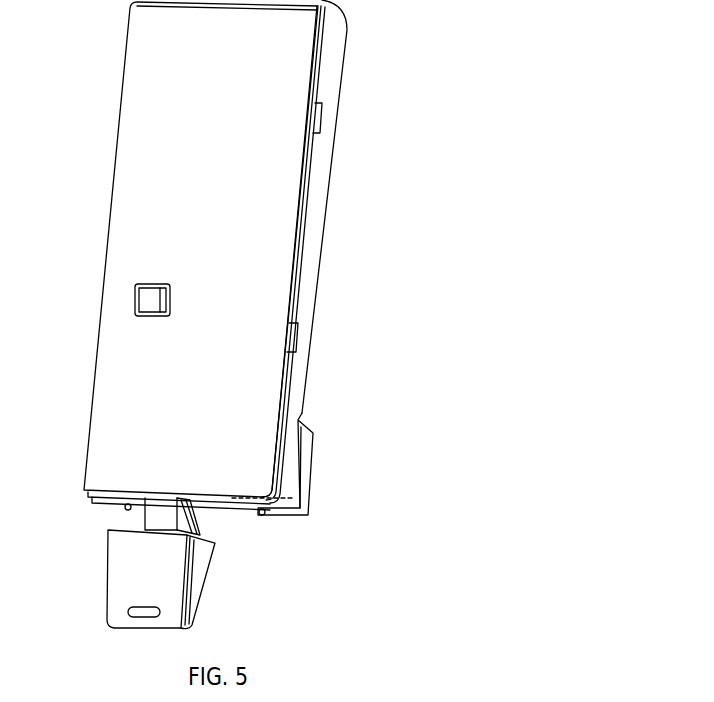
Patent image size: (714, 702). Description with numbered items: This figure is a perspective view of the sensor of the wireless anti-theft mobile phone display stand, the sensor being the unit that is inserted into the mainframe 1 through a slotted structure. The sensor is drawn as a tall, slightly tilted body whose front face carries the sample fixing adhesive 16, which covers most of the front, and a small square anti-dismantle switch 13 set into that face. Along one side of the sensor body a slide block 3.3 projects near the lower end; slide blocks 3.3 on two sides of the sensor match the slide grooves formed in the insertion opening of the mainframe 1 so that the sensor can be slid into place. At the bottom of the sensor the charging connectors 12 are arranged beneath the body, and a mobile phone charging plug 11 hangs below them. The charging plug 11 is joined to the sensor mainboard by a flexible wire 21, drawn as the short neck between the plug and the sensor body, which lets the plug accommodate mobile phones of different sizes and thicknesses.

The mainframe 1 is at (315, 240).
The sample fixing adhesive 16 is at (150, 103).
The anti-dismantle switch 13 is at (135, 297).
The slide block 3.3 is at (312, 462).
The charging connector 12 is at (110, 510).
The flexible wire 21 is at (202, 518).
The mobile phone charging plug 11 is at (132, 586).